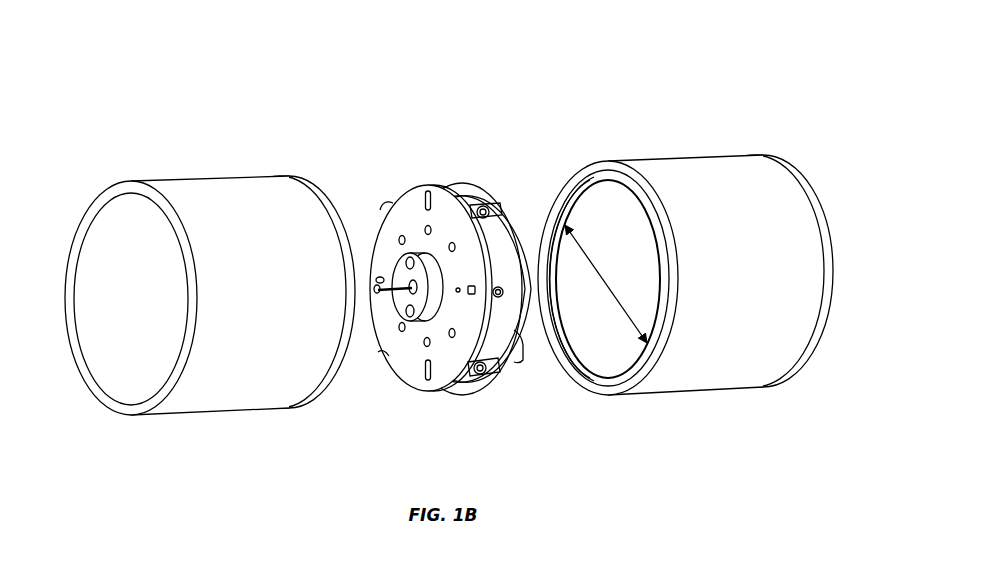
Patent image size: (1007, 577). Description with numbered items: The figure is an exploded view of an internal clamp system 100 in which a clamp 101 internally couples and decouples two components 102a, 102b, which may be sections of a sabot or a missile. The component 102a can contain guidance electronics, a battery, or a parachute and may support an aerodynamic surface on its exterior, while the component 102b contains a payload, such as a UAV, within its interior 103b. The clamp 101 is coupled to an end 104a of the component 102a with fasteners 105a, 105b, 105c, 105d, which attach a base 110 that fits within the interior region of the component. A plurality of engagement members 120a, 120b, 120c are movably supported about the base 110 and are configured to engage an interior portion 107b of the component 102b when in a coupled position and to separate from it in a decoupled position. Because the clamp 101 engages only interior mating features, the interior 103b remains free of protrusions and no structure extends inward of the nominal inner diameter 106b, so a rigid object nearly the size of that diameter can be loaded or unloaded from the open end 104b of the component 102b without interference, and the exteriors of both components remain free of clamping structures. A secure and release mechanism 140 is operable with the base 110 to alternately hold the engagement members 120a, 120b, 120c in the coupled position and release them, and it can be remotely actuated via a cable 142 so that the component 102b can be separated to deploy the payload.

The internal clamp system 100 is at (333, 83).
The clamp 101 is at (437, 140).
The component 102a is at (210, 299).
The component 102b is at (674, 284).
The interior 103b is at (587, 336).
The end 104a is at (317, 418).
The open end 104b is at (630, 418).
The fastener 105a is at (486, 211).
The fastener 105b is at (382, 356).
The fastener 105c is at (447, 390).
The fastener 105d is at (388, 200).
The inner diameter 106b is at (607, 285).
The interior portion 107b is at (565, 352).
The base 110 is at (378, 220).
The engagement member 120a is at (484, 185).
The engagement member 120b is at (487, 391).
The engagement member 120c is at (525, 357).
The secure and release mechanism 140 is at (412, 343).
The cable 142 is at (383, 291).